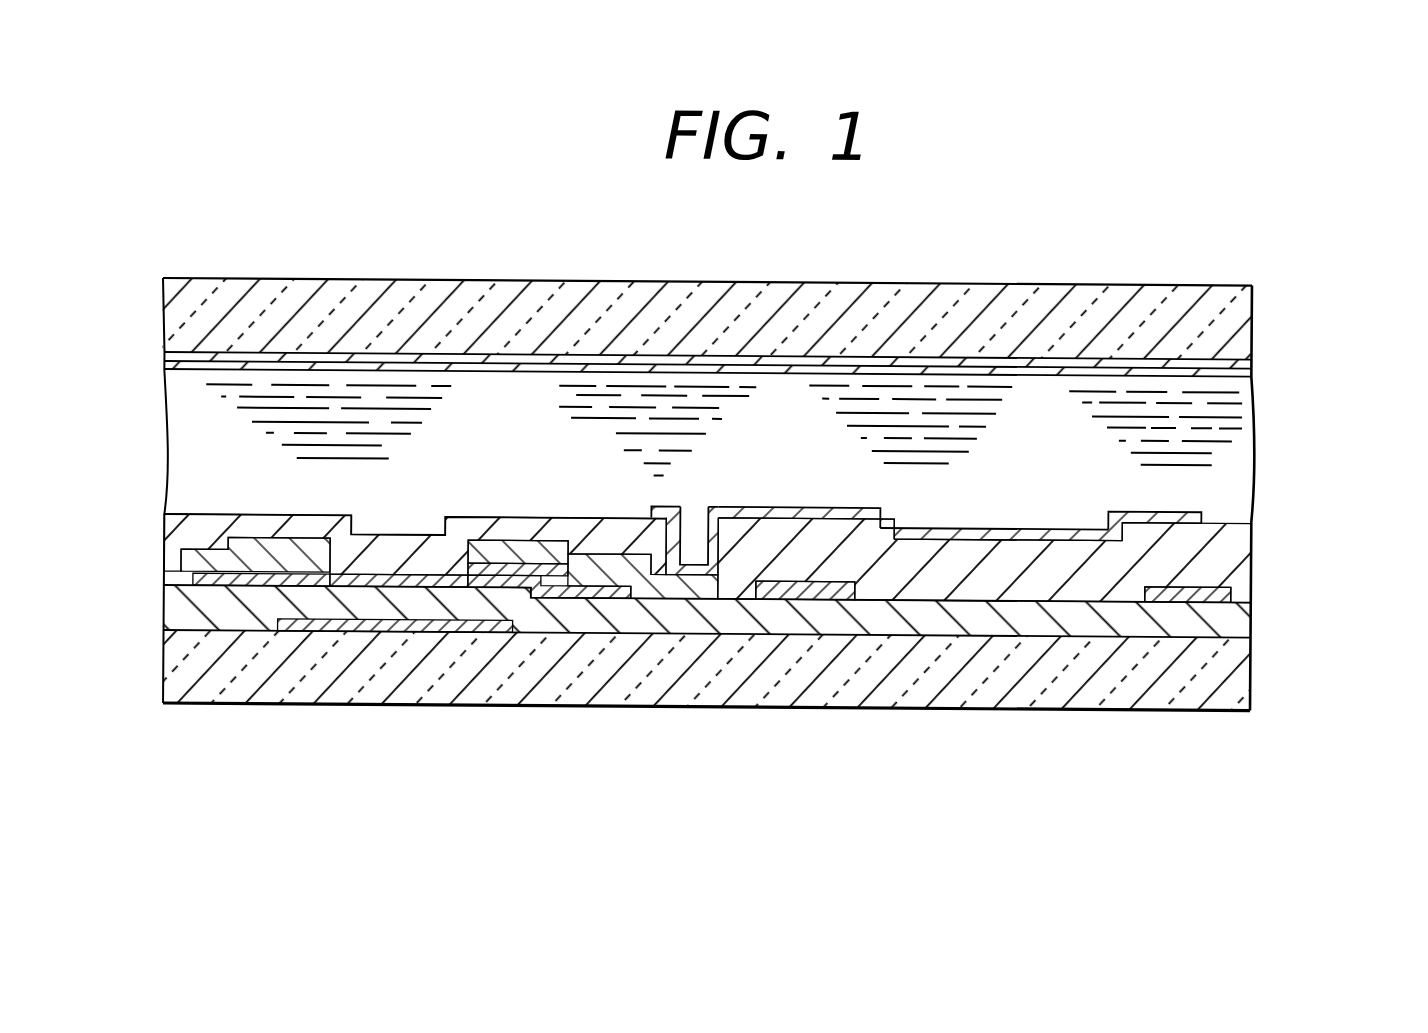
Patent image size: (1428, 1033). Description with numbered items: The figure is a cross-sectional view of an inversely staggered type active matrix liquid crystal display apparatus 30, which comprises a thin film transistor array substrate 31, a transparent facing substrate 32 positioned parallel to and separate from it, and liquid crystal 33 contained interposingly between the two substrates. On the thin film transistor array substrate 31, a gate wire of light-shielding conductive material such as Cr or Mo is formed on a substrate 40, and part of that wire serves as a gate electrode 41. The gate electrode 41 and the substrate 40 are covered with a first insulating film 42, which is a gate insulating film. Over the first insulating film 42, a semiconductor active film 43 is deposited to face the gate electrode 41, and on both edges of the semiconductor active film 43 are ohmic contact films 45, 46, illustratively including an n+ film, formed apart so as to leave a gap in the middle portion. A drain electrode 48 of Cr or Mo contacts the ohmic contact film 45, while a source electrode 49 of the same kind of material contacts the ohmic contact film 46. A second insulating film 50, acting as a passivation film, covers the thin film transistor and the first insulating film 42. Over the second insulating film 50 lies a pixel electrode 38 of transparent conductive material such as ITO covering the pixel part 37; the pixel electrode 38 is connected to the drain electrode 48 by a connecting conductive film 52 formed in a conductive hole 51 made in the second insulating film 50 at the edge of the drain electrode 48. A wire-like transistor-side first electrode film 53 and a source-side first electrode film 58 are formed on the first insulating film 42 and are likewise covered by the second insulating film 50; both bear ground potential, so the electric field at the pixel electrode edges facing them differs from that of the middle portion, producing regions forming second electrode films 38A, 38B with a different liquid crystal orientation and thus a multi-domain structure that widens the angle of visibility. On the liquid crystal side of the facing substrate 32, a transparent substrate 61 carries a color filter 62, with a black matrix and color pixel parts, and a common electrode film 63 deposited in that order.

The liquid crystal display apparatus 30 is at (754, 507).
The thin film transistor array substrate 31 is at (707, 507).
The facing substrate 32 is at (746, 307).
The liquid crystal 33 is at (1223, 428).
The pixel part 37 is at (927, 497).
The pixel electrode 38 is at (926, 640).
The second electrode film 38A is at (851, 512).
The second electrode film 38B is at (1154, 643).
The substrate 40 is at (655, 688).
The gate electrode 41 is at (375, 626).
The first insulating film 42 is at (181, 611).
The semiconductor active film 43 is at (420, 587).
The ohmic contact film 45 is at (563, 585).
The ohmic contact film 46 is at (298, 582).
The drain electrode 48 is at (490, 549).
The source electrode 49 is at (254, 549).
The second insulating film 50 is at (168, 536).
The conductive hole 51 is at (700, 546).
The connecting conductive film 52 is at (718, 544).
The transistor-side first electrode film 53 is at (798, 591).
The source-side first electrode film 58 is at (1222, 591).
The transparent substrate 61 is at (718, 291).
The color filter 62 is at (912, 357).
The common electrode film 63 is at (1183, 365).